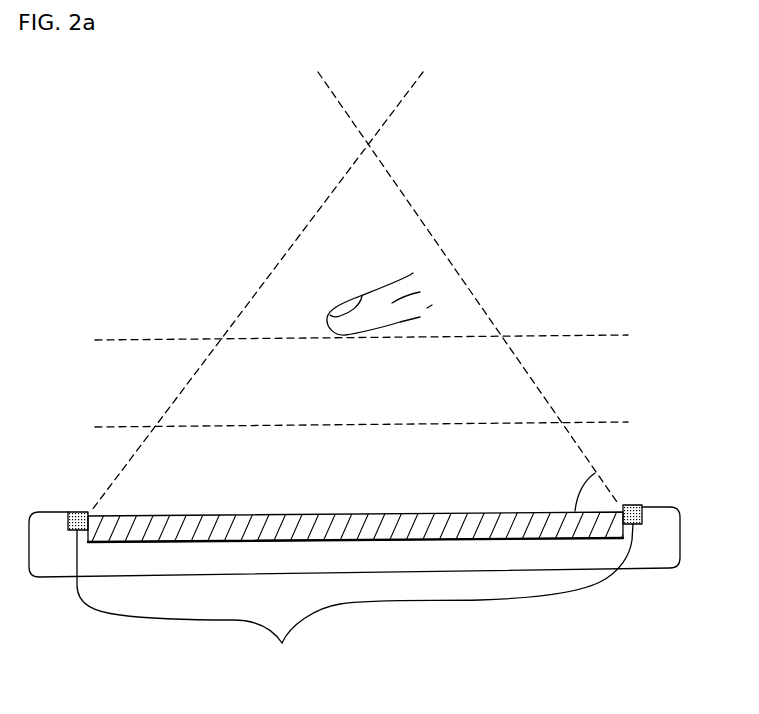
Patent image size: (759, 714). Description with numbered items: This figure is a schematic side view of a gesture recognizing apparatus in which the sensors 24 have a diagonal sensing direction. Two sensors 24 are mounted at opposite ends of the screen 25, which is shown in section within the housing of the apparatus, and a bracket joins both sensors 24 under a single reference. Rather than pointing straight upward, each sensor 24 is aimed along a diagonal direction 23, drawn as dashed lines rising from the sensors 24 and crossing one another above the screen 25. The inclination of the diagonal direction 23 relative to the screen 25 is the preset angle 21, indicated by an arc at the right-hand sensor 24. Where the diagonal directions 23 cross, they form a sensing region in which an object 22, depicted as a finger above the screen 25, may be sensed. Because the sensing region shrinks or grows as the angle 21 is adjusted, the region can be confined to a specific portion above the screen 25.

The angle θ 21 is at (583, 482).
The object 22 is at (393, 303).
The diagonal direction 23 is at (410, 202).
The sensors 24 is at (355, 589).
The screen 25 is at (358, 524).